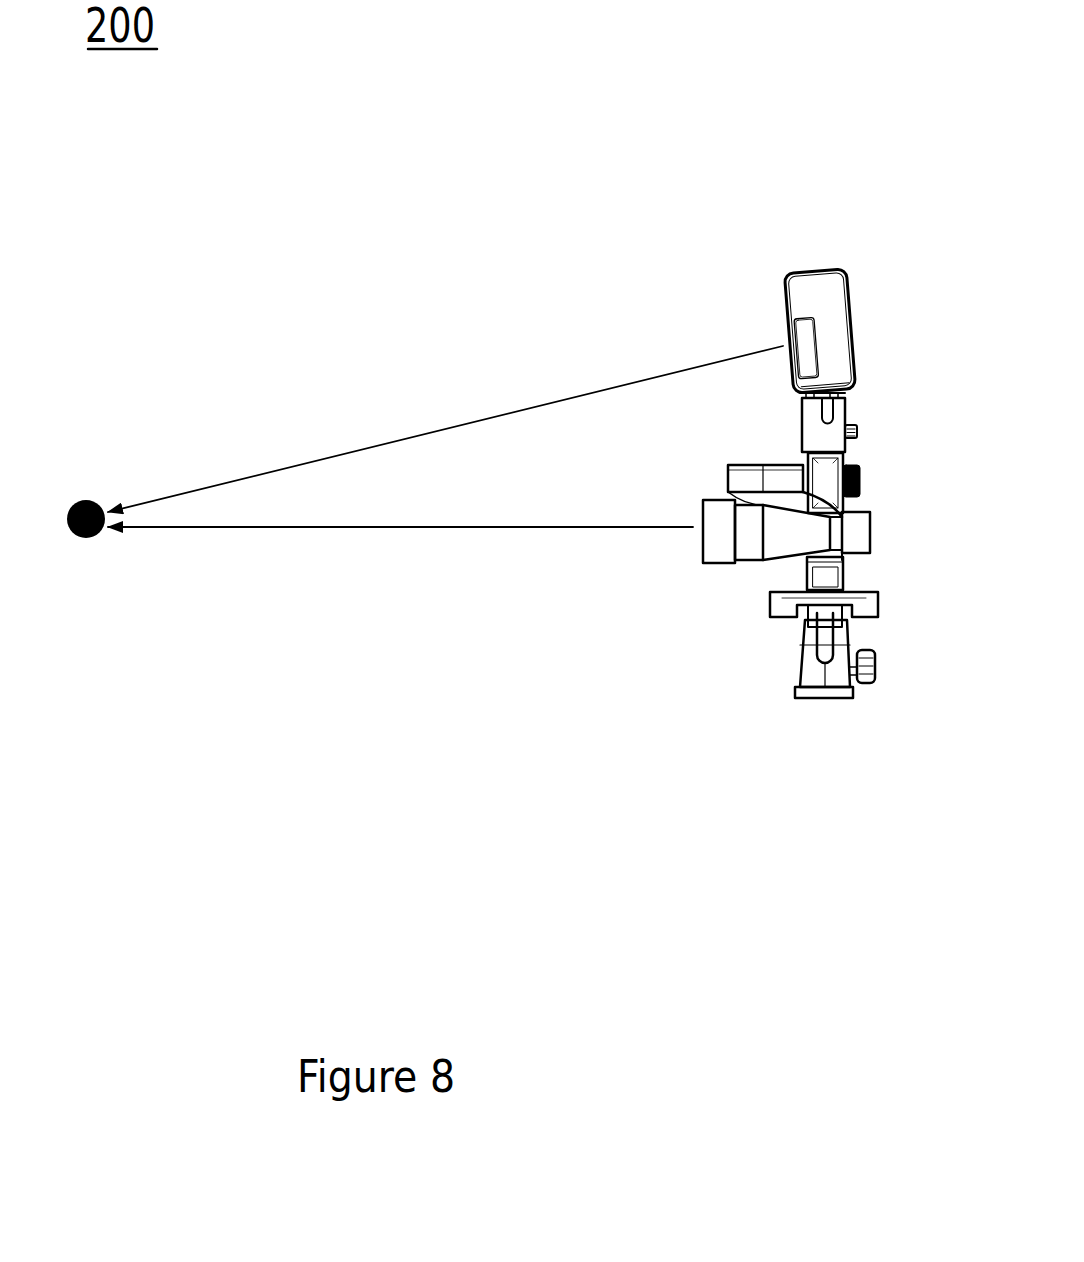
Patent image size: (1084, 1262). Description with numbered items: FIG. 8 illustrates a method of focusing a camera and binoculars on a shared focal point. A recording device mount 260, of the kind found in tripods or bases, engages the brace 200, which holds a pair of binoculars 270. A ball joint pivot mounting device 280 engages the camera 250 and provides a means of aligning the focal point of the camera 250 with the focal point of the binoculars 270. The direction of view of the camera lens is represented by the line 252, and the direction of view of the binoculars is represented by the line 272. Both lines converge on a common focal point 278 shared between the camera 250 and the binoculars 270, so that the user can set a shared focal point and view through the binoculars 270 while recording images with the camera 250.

The brace 200 is at (875, 488).
The camera 250 is at (797, 257).
The line representing direction of view of camera lens 252 is at (565, 398).
The recording device mount 260 is at (847, 717).
The binoculars 270 is at (685, 570).
The line representing direction of view of binoculars 272 is at (449, 527).
The common focal point 278 is at (86, 500).
The ball joint pivot mounting device 280 is at (867, 415).